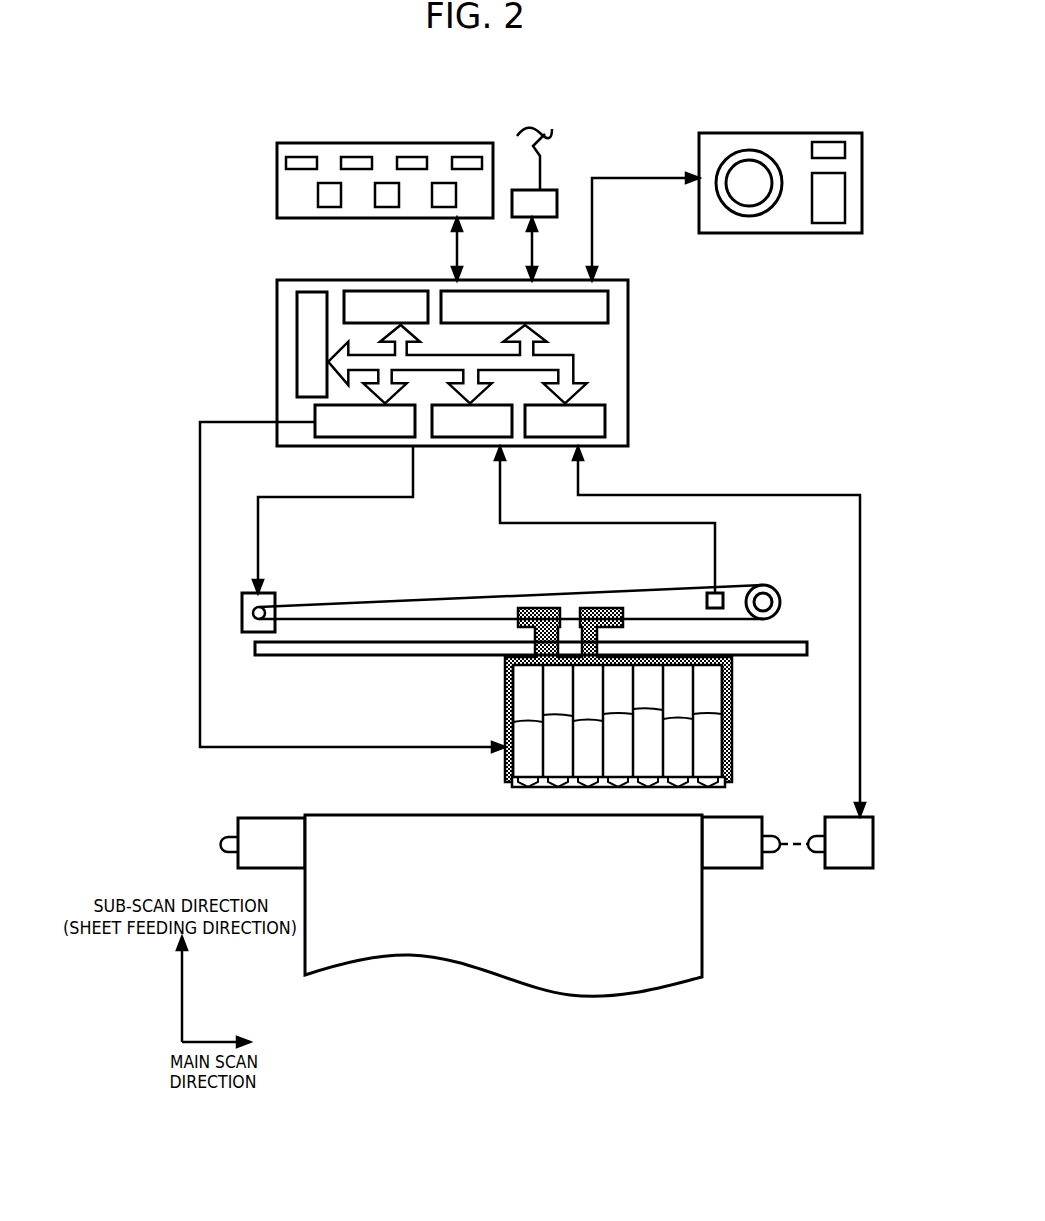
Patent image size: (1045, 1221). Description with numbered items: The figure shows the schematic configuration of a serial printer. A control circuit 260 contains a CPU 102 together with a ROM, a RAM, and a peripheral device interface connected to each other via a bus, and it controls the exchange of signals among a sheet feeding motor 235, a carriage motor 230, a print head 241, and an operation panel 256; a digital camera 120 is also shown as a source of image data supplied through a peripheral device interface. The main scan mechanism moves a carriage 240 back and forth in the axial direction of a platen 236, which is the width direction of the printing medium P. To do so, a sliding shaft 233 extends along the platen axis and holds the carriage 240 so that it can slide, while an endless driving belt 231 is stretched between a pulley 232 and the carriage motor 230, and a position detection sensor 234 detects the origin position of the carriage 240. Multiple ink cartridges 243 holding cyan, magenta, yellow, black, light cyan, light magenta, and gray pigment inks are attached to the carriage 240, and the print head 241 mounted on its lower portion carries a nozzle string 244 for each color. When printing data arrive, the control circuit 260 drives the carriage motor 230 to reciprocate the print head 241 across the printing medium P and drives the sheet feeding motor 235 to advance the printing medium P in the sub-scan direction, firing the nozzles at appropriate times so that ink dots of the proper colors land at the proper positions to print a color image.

The operation panel 256 is at (433, 143).
The digital camera 120 is at (775, 133).
The CPU 102 is at (352, 290).
The control circuit 260 is at (496, 343).
The endless driving belt 231 is at (333, 600).
The pulley 232 is at (747, 588).
The position detection sensor 234 is at (705, 598).
The carriage motor 230 is at (244, 634).
The sliding shaft 233 is at (313, 657).
The ink cartridges 243 is at (708, 697).
The carriage 240 is at (745, 724).
The print head 241 is at (700, 790).
The nozzle string 244 is at (512, 799).
The platen 236 is at (732, 870).
The sheet feeding motor 235 is at (845, 870).
The printing medium P is at (702, 953).